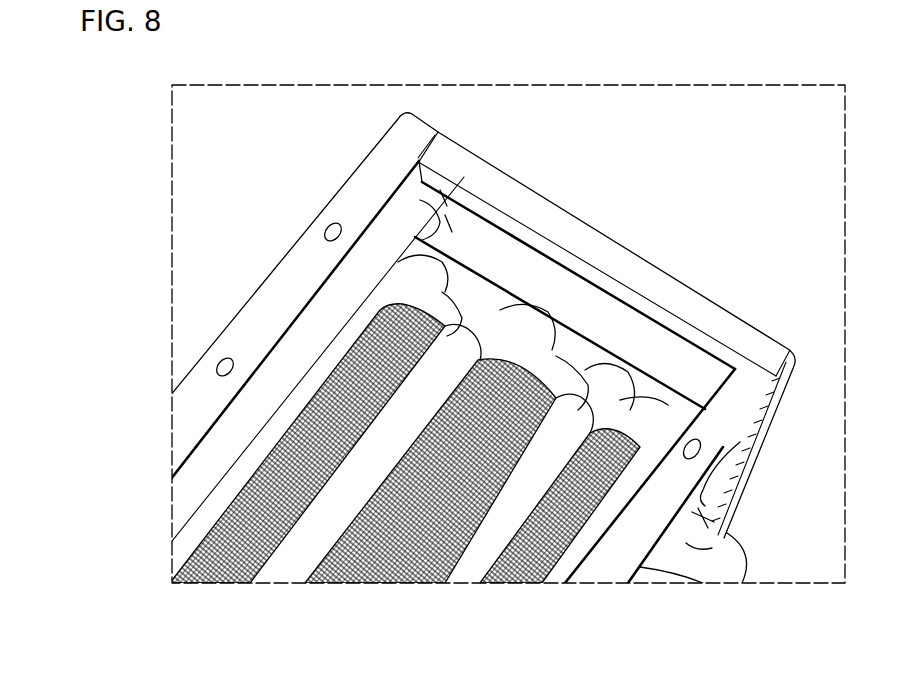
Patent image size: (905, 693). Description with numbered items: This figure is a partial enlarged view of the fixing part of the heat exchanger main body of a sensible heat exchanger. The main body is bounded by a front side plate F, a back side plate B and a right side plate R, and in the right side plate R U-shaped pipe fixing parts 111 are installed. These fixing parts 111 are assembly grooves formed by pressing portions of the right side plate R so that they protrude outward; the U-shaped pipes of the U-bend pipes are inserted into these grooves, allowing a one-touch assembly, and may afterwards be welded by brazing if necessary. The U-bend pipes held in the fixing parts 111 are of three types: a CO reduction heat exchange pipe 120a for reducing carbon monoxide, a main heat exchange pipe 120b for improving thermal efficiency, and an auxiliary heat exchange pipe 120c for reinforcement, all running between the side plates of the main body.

The U-shaped pipe fixing part 111 is at (580, 346).
The back side plate B is at (279, 293).
The right side plate R is at (648, 274).
The front side plate F is at (723, 403).
The CO reduction heat exchange pipe 120a is at (512, 527).
The main heat exchange pipe 120b is at (262, 486).
The auxiliary heat exchange pipe 120c is at (667, 333).